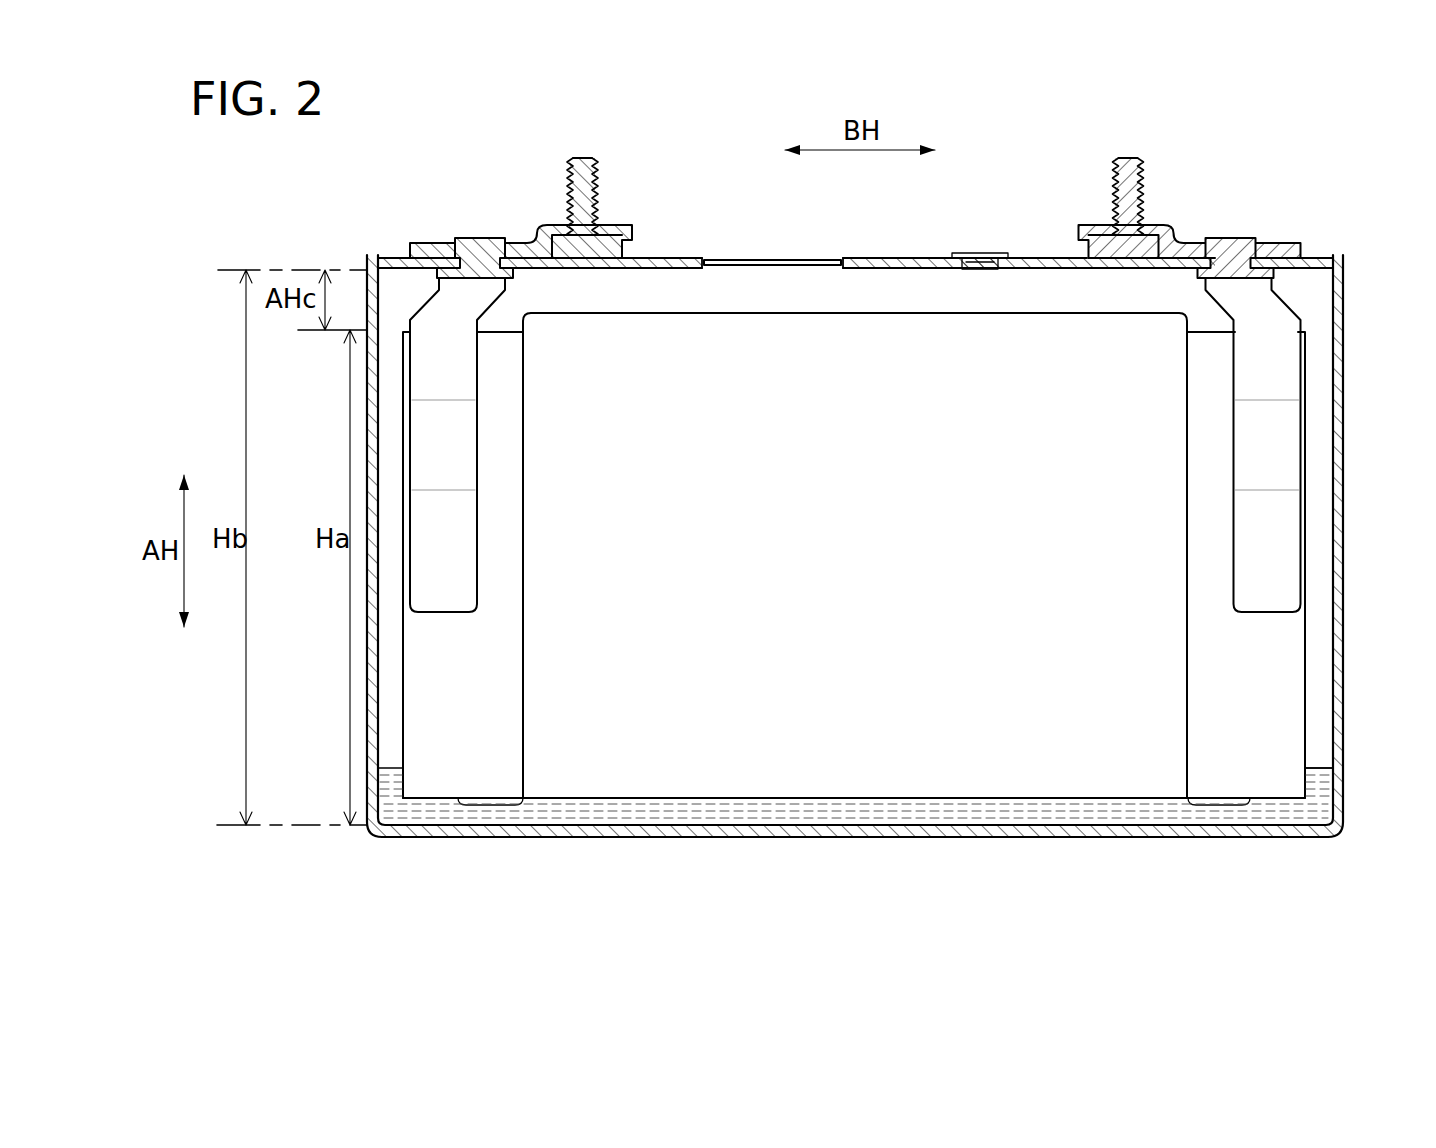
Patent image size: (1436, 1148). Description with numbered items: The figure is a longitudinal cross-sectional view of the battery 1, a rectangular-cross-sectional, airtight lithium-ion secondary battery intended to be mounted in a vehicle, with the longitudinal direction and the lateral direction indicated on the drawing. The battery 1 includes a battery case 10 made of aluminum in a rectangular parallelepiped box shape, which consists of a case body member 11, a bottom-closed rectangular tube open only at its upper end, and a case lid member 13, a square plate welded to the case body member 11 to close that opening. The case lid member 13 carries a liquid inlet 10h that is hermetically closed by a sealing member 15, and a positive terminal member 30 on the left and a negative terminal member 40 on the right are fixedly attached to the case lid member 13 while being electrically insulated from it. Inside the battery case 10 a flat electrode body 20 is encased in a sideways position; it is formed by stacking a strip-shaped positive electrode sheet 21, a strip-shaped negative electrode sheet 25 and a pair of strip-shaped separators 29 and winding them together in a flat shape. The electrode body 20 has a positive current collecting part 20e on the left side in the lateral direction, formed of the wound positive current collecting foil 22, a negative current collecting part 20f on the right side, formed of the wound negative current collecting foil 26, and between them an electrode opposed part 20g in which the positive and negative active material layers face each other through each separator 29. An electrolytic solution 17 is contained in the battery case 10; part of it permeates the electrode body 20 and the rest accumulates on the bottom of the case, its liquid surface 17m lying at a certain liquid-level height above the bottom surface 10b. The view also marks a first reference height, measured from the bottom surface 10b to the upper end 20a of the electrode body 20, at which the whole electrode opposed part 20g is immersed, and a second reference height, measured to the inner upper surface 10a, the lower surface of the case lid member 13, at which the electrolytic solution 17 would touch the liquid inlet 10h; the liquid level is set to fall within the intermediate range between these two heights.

The battery 1 is at (963, 172).
The battery case 10 is at (1335, 428).
The inner upper surface 10a is at (665, 285).
The bottom surface 10b is at (540, 810).
The liquid inlet 10h is at (985, 272).
The case body member 11 is at (1338, 515).
The case lid member 13 is at (755, 258).
The sealing member 15 is at (1000, 253).
The electrolytic solution 17 is at (842, 748).
The liquid surface 17m is at (1318, 770).
The electrode body 20 is at (727, 740).
The upper end 20a is at (785, 330).
The positive current collecting part 20e is at (458, 805).
The negative current collecting part 20f is at (1243, 805).
The electrode opposed part 20g is at (882, 316).
The positive electrode sheet 21 is at (630, 756).
The positive current collecting foil 22 is at (428, 757).
The negative electrode sheet 25 is at (1078, 755).
The negative current collecting foil 26 is at (1277, 762).
The separator 29 is at (950, 755).
The positive terminal member 30 is at (550, 223).
The negative terminal member 40 is at (1160, 227).